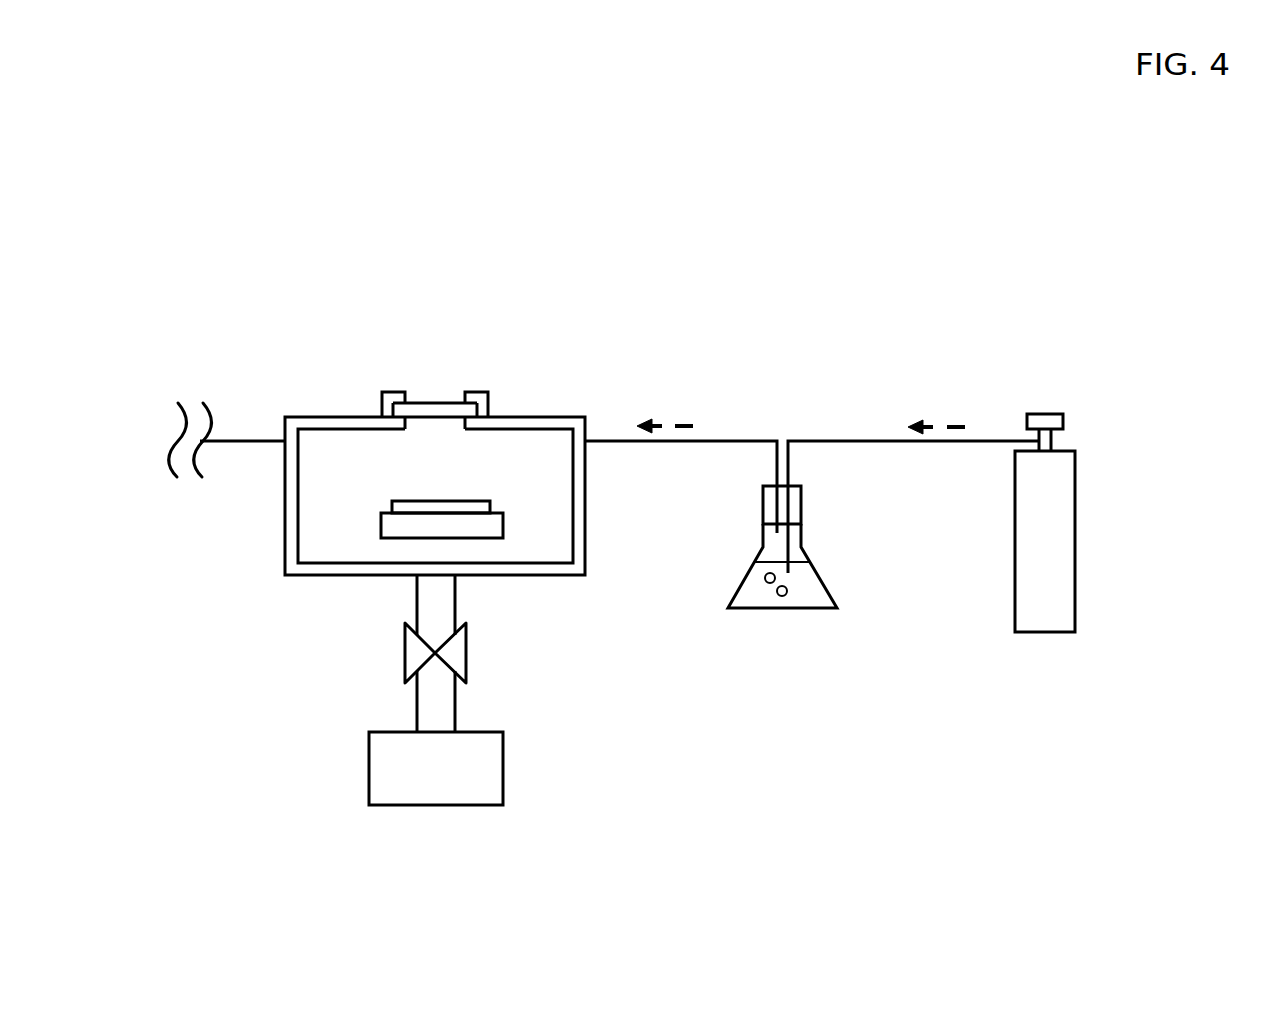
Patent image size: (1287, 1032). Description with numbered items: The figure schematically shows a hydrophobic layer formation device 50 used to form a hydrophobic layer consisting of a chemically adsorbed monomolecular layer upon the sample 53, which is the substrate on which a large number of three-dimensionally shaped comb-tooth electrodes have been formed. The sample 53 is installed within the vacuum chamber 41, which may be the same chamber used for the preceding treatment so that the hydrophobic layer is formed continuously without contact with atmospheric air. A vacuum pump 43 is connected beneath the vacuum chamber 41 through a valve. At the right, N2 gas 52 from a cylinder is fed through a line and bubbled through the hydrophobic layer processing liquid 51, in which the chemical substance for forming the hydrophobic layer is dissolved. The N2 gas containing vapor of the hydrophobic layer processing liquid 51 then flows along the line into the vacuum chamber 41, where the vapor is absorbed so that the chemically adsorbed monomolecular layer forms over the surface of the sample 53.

The hydrophobic layer formation device 50 is at (726, 242).
The vacuum chamber 41 is at (545, 417).
The sample 53 is at (390, 507).
The vacuum pump 43 is at (395, 805).
The hydrophobic layer processing liquid 51 is at (750, 599).
The N2 gas 52 is at (1043, 632).